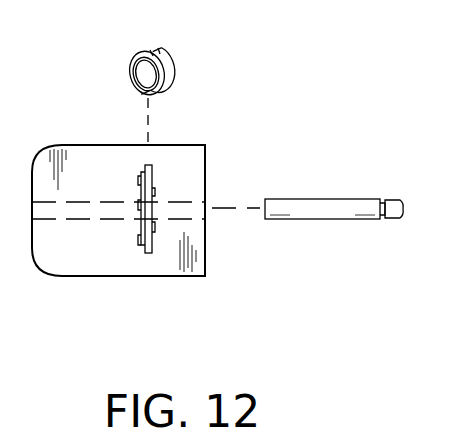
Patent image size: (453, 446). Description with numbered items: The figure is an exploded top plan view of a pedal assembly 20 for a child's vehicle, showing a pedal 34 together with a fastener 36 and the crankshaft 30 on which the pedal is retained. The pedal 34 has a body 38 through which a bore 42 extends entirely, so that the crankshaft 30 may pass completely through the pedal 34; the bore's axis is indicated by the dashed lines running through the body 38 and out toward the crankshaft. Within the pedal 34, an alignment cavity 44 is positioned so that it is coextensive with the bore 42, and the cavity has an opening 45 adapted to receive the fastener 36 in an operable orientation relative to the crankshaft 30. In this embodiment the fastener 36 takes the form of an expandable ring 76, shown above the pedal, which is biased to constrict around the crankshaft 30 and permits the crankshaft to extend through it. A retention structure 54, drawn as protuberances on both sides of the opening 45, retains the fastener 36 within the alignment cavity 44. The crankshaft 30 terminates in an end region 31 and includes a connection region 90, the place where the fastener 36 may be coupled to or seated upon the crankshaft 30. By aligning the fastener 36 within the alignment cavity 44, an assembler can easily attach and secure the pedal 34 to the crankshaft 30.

The pedal assembly 20 is at (98, 130).
The crankshaft 30 is at (311, 198).
The end region 31 is at (393, 202).
The pedal 34 is at (201, 143).
The fastener 36 is at (184, 48).
The body 38 is at (208, 167).
The bore 42 is at (205, 212).
The alignment cavity 44 is at (150, 257).
The opening 45 is at (153, 250).
The retention structure 54 is at (153, 183).
The expandable ring 76 is at (173, 82).
The connection region 90 is at (383, 222).